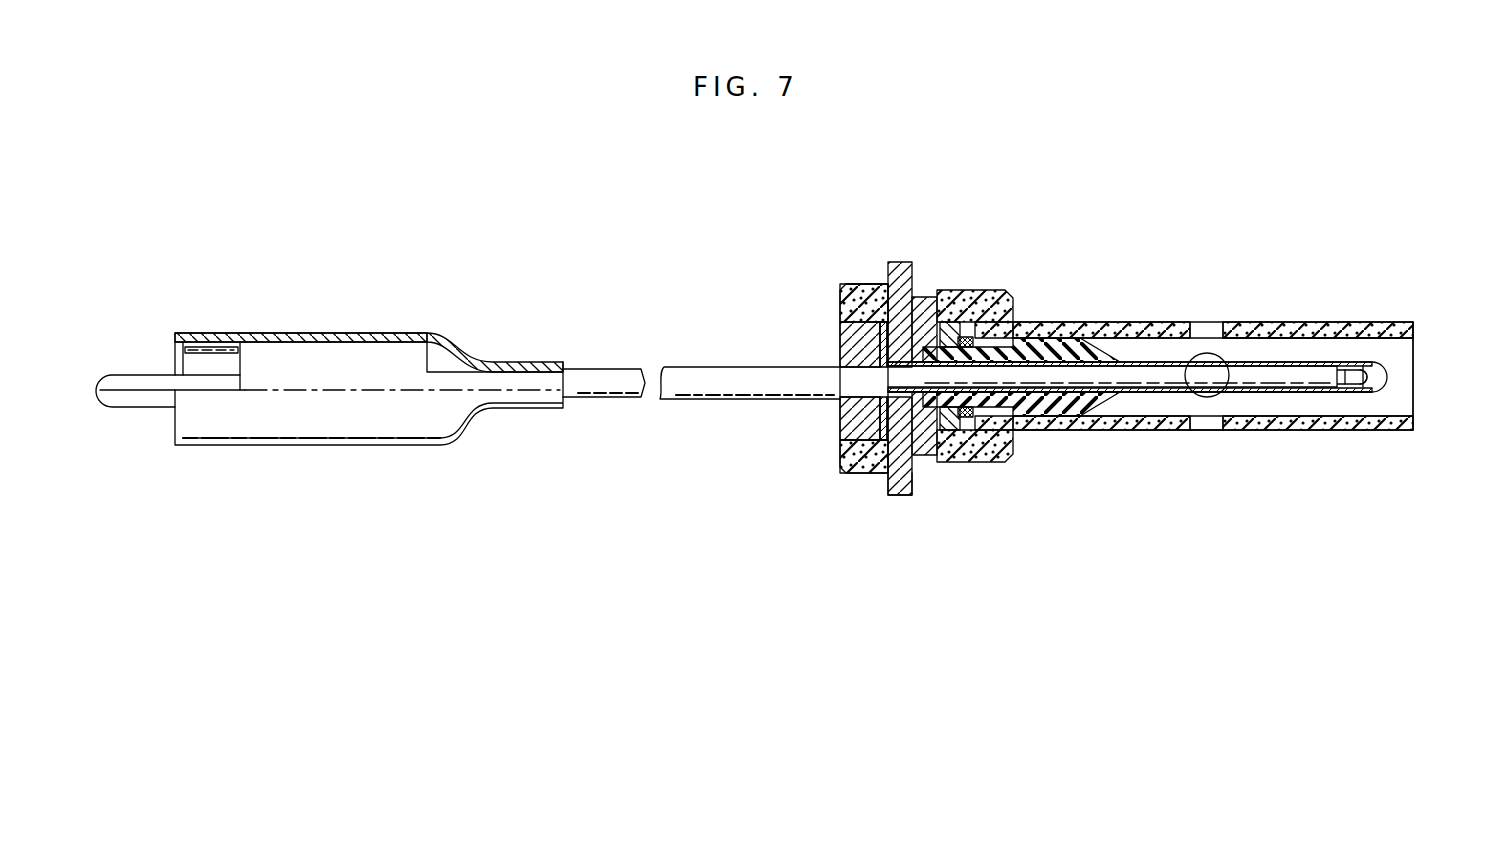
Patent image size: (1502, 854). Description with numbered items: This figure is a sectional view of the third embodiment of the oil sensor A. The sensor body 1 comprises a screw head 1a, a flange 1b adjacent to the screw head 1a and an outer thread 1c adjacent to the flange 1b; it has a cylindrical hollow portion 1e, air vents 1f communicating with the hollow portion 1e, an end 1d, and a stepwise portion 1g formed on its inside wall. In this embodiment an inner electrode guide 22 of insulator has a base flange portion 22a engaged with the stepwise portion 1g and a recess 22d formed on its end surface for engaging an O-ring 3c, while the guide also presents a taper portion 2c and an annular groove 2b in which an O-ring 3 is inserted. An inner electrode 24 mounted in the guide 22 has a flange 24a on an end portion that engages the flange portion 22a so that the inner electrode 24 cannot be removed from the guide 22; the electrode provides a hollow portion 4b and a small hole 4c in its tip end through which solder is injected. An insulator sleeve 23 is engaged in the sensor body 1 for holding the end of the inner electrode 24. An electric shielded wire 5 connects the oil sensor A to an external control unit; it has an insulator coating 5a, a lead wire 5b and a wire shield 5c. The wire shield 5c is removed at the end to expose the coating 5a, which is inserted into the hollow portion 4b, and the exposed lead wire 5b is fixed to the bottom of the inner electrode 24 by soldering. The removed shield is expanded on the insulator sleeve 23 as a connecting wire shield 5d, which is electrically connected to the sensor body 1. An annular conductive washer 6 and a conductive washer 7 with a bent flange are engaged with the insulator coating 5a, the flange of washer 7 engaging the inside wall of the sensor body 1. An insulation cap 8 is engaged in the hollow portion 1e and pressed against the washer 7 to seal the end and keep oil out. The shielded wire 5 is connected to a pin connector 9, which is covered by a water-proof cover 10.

The sensor body 1 is at (1095, 431).
The screw head 1a is at (843, 470).
The flange 1b is at (898, 497).
The outer thread 1c is at (978, 465).
The end of the sensor body 1d is at (1416, 404).
The cylindrical hollow portion 1e is at (1277, 345).
The air vents 1f is at (1205, 432).
The stepwise portion 1g is at (990, 452).
The annular groove 2b is at (1014, 438).
The taper portion 2c is at (1100, 350).
The O-ring 3 is at (985, 312).
The O-ring 3c is at (961, 330).
The hollow portion of the inner electrode 4b is at (1345, 394).
The small hole 4c is at (1395, 377).
The electric shielded wire 5 is at (704, 367).
The insulator coating 5a is at (1140, 372).
The lead wire 5b is at (1366, 394).
The wire shield 5c is at (607, 372).
The connecting wire shield 5d is at (899, 292).
The annular conductive washer 6 is at (878, 478).
The conductive washer 7 is at (863, 300).
The insulation cap 8 is at (843, 345).
The pin connector 9 is at (325, 352).
The water-proof cover 10 is at (357, 430).
The inner electrode guide 22 is at (1052, 350).
The base flange portion 22a is at (975, 336).
The recess 22d is at (953, 440).
The insulator sleeve 23 is at (925, 323).
The inner electrode 24 is at (1133, 395).
The flange 24a is at (946, 432).
The oil sensor A is at (1199, 318).